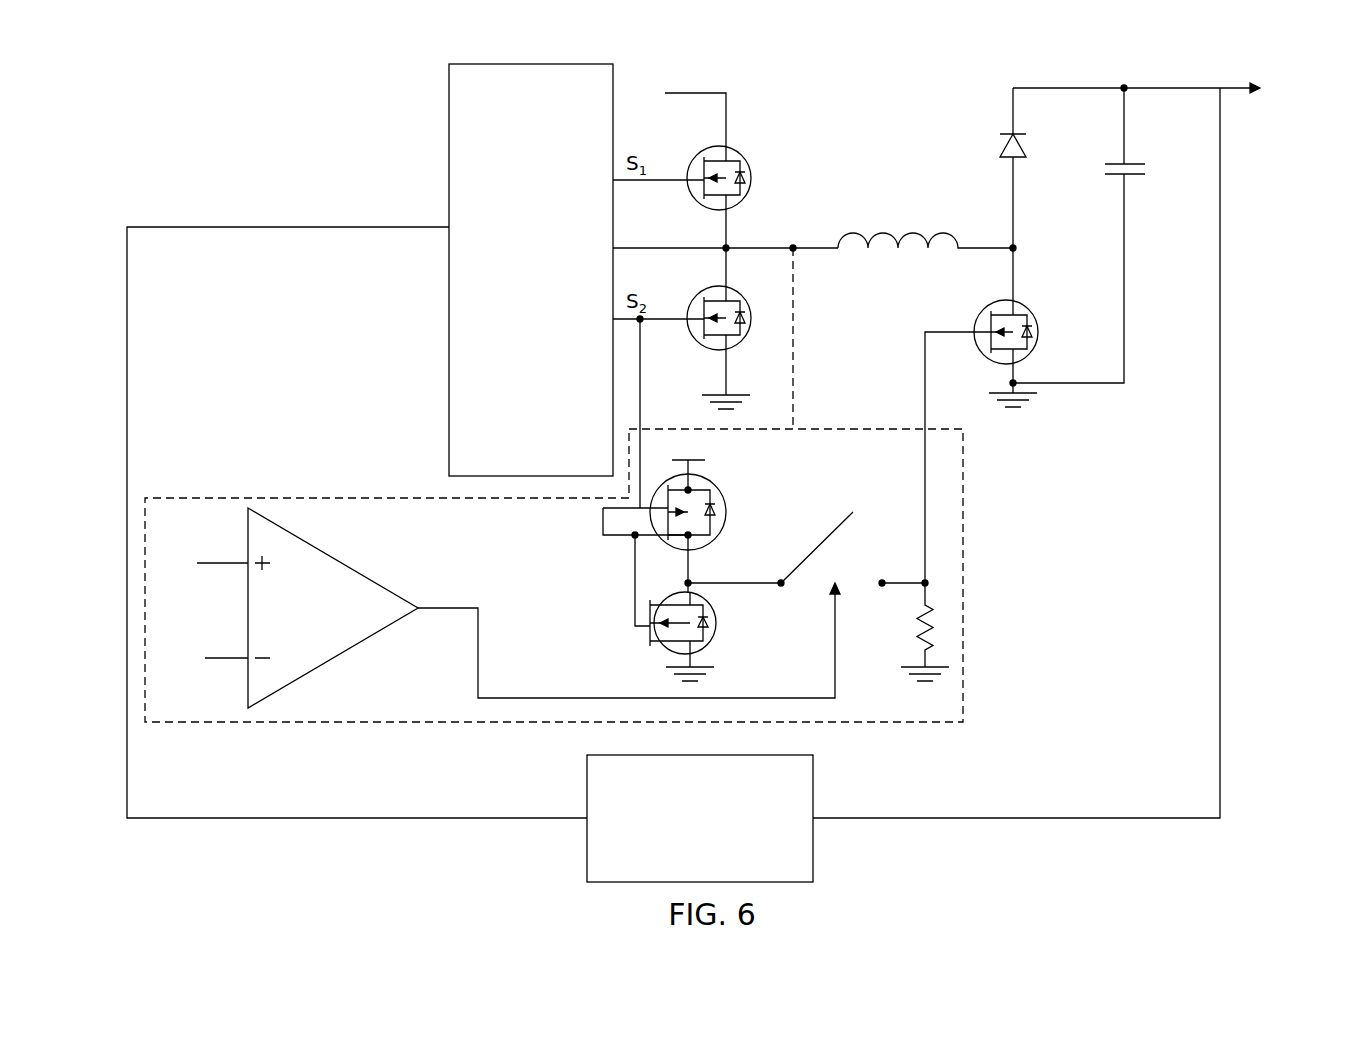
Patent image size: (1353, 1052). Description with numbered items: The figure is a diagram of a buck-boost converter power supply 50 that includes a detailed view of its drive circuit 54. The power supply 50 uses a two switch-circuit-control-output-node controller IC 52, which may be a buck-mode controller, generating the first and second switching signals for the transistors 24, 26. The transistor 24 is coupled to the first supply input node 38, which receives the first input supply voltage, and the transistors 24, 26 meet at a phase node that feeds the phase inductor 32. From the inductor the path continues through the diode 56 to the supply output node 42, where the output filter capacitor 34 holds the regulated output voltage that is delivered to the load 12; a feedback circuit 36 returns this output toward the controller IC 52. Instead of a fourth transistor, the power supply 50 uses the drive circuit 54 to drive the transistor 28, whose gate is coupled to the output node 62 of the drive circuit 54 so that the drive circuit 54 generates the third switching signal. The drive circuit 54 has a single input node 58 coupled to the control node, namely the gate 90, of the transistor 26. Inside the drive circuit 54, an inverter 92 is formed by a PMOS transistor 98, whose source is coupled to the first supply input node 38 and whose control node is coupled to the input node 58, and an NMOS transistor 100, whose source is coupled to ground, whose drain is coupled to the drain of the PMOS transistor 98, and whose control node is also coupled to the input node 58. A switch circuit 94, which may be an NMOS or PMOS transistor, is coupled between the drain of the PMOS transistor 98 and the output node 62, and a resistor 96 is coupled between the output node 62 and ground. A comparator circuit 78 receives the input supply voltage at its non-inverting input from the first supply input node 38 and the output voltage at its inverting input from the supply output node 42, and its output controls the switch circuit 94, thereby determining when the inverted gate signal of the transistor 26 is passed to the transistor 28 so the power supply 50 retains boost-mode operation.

The load 12 is at (1297, 87).
The transistor 24 is at (752, 172).
The transistor 26 is at (735, 298).
The transistor 28 is at (1040, 308).
The phase inductor 32 is at (882, 232).
The output filter capacitor 34 is at (1135, 167).
The feedback circuit 36 is at (813, 778).
The first supply input node 38 is at (733, 113).
The supply output node 42 is at (1124, 88).
The buck-boost converter power supply 50 is at (131, 841).
The controller IC 52 is at (532, 64).
The drive circuit 54 is at (965, 540).
The diode 56 is at (998, 148).
The input node 58 is at (642, 409).
The output node 62 is at (922, 405).
The comparator circuit 78 is at (345, 655).
The control node (gate) 90 is at (664, 326).
The inverter 92 is at (691, 557).
The switch circuit 94 is at (850, 553).
The resistor 96 is at (915, 627).
The PMOS transistor 98 is at (724, 543).
The NMOS transistor 100 is at (638, 646).